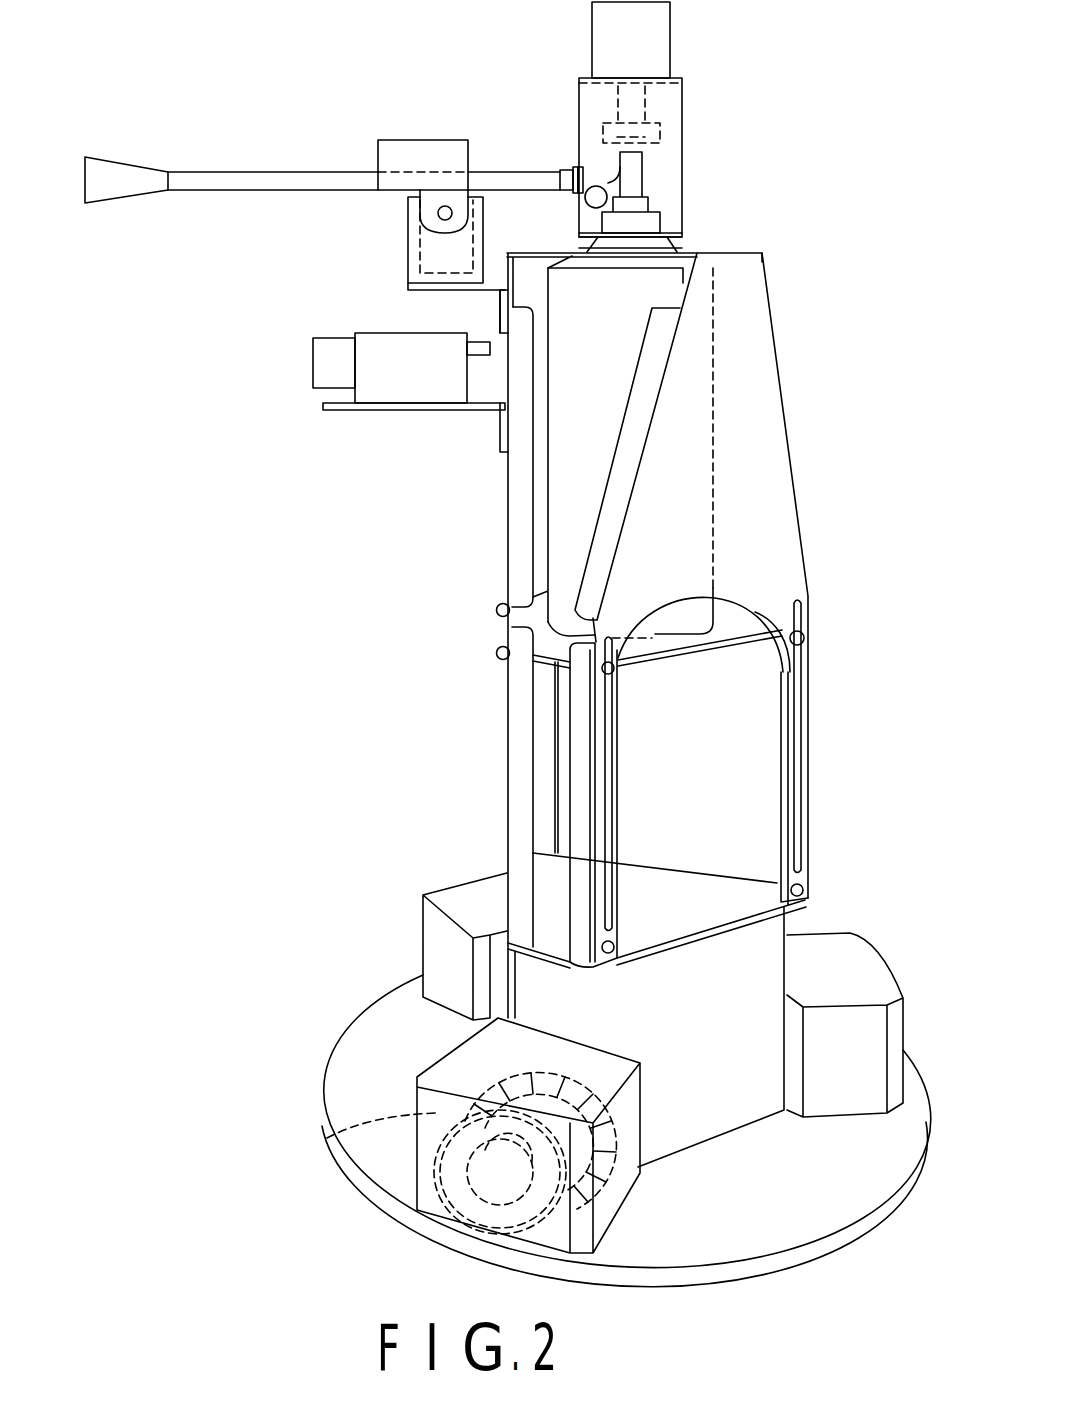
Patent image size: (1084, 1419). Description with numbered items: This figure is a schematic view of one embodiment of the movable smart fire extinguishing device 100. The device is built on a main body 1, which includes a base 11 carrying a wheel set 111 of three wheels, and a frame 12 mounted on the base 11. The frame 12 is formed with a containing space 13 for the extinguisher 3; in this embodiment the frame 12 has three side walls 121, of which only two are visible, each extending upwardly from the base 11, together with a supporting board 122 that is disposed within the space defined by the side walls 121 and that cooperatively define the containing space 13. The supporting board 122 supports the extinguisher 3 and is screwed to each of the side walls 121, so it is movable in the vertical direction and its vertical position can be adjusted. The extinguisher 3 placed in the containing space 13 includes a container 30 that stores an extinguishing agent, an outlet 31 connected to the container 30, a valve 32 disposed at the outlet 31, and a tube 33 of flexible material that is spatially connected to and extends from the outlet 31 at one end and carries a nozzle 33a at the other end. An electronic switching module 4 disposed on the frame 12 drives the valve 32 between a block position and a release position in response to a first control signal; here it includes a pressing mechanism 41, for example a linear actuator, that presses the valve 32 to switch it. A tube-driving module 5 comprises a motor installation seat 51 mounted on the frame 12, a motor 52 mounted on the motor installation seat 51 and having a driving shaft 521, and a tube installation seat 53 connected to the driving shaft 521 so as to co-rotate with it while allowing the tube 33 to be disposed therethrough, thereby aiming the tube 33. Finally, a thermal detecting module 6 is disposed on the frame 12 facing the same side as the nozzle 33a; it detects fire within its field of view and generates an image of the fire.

The movable smart fire extinguishing device 100 is at (864, 348).
The main body 1 is at (472, 610).
The base 11 is at (388, 1085).
The wheel set 111 is at (330, 1139).
The frame 12 is at (818, 578).
The side walls 121 is at (520, 500).
The supporting board 122 is at (687, 652).
The containing space 13 is at (742, 608).
The extinguisher 3 is at (720, 280).
The container 30 is at (545, 287).
The outlet 31 is at (563, 172).
The valve 32 is at (617, 153).
The tube 33 is at (287, 180).
The nozzle 33a is at (128, 180).
The electronic switching module 4 is at (658, 47).
The pressing mechanism 41 is at (650, 132).
The tube-driving module 5 is at (378, 106).
The motor installation seat 51 is at (406, 280).
The motor 52 is at (405, 250).
The driving shaft 521 is at (437, 211).
The tube installation seat 53 is at (422, 152).
The thermal detecting module 6 is at (390, 388).